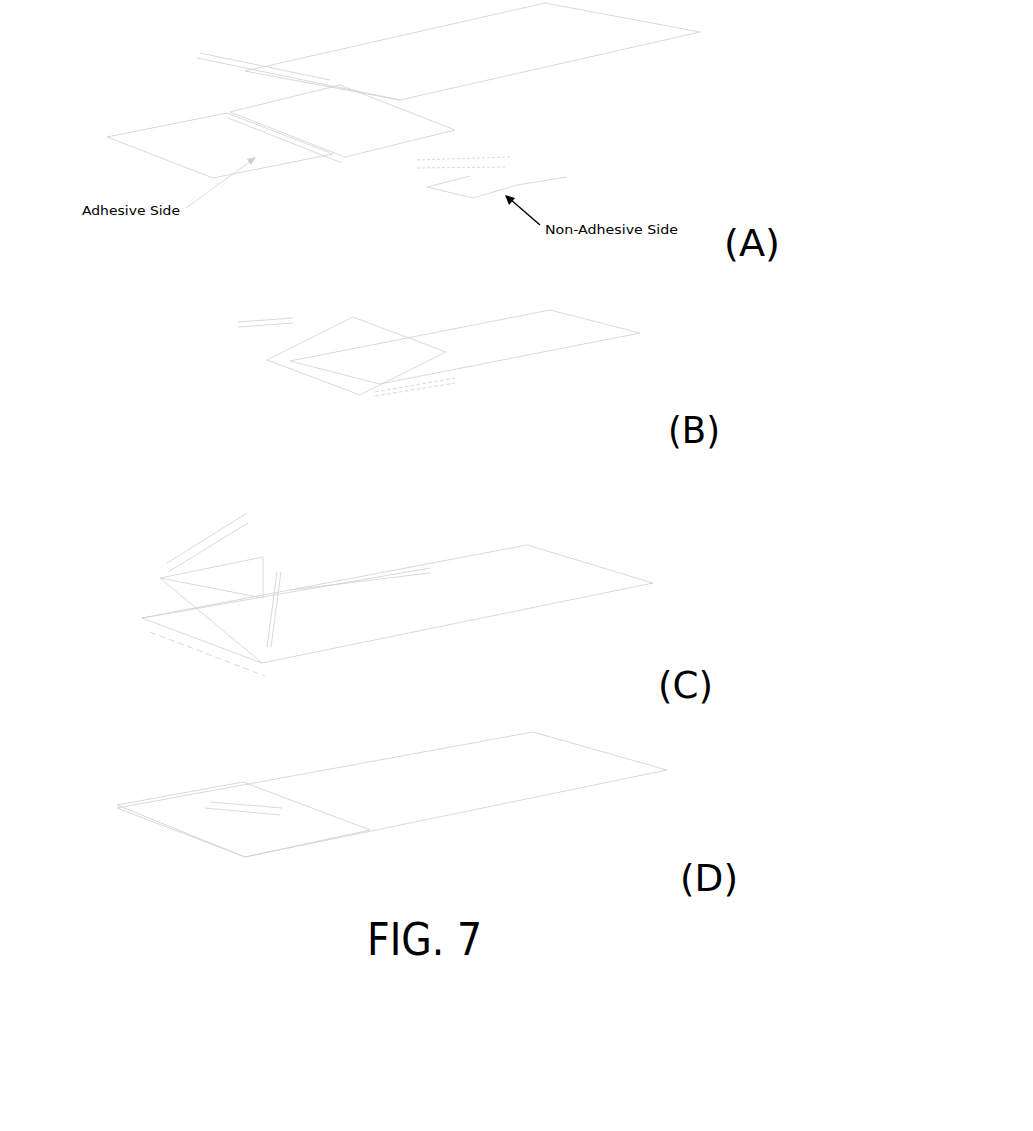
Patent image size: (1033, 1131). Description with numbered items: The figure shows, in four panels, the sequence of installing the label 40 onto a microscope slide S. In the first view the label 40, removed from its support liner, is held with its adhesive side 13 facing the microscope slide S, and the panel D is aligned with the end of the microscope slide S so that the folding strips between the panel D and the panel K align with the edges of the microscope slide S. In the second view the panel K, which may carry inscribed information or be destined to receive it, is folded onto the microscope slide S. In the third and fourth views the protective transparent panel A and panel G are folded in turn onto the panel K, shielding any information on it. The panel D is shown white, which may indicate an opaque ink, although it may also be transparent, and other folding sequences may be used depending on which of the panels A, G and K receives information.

The adhesive side 13 is at (309, 432).
The label 40 is at (340, 168).
The microscope slide S is at (565, 12).
The panel A is at (283, 432).
The panel K is at (276, 372).
The panel D is at (341, 124).
The panel G is at (388, 402).